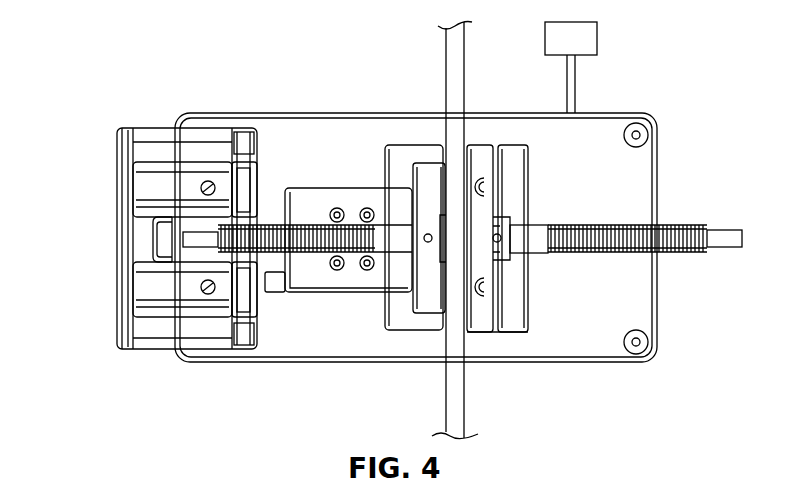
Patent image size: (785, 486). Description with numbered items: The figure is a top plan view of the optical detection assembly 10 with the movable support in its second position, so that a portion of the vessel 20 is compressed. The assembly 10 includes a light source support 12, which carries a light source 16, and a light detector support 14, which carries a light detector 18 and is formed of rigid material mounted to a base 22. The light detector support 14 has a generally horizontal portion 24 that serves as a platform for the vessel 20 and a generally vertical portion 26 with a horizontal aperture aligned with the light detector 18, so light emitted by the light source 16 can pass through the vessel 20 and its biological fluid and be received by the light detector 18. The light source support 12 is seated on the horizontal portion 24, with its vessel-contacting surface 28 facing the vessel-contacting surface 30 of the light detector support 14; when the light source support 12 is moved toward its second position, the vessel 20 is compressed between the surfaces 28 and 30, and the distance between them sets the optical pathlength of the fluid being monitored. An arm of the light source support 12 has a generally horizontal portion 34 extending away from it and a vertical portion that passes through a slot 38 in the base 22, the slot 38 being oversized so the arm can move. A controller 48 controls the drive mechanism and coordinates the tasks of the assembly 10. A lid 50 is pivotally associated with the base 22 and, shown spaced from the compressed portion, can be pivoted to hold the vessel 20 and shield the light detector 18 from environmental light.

The optical detection assembly 10 is at (108, 102).
The light source support 12 is at (425, 320).
The light detector support 14 is at (487, 336).
The light source 16 is at (263, 210).
The light detector 18 is at (679, 226).
The vessel 20 is at (466, 410).
The base 22 is at (645, 287).
The generally horizontal portion 24 is at (388, 330).
The generally vertical portion 26 is at (477, 155).
The vessel-contacting surface 28 is at (458, 205).
The vessel-contacting surface 30 is at (457, 200).
The generally horizontal portion 34 is at (310, 198).
The slot 38 is at (272, 292).
The controller 48 is at (597, 44).
The lid 50 is at (157, 133).